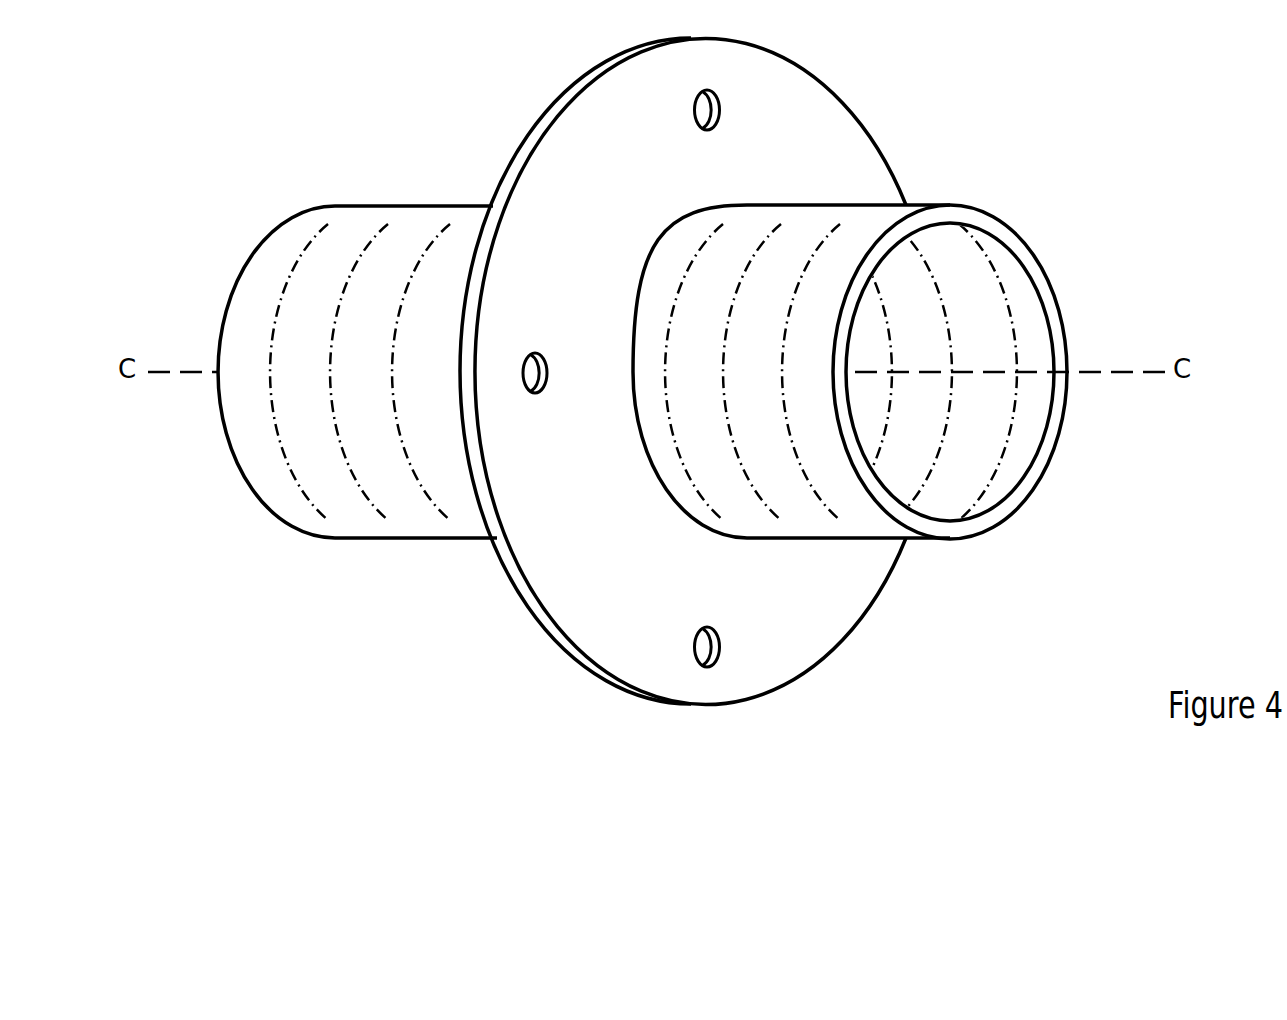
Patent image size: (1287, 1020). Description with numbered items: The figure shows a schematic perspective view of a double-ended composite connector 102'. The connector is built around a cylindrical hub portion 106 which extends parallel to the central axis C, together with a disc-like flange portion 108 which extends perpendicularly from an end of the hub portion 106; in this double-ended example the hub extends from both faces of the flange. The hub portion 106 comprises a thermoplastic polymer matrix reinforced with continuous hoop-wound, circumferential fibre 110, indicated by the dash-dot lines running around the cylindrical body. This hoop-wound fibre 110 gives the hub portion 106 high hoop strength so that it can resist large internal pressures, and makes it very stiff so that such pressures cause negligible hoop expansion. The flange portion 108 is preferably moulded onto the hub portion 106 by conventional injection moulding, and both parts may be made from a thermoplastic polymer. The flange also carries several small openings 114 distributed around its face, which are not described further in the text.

The double-ended composite connector 102' is at (661, 372).
The hub portion 106 is at (945, 498).
The flange portion 108 is at (768, 655).
The hoop-wound fibre 110 is at (797, 452).
The mounting holes 114 is at (694, 108).